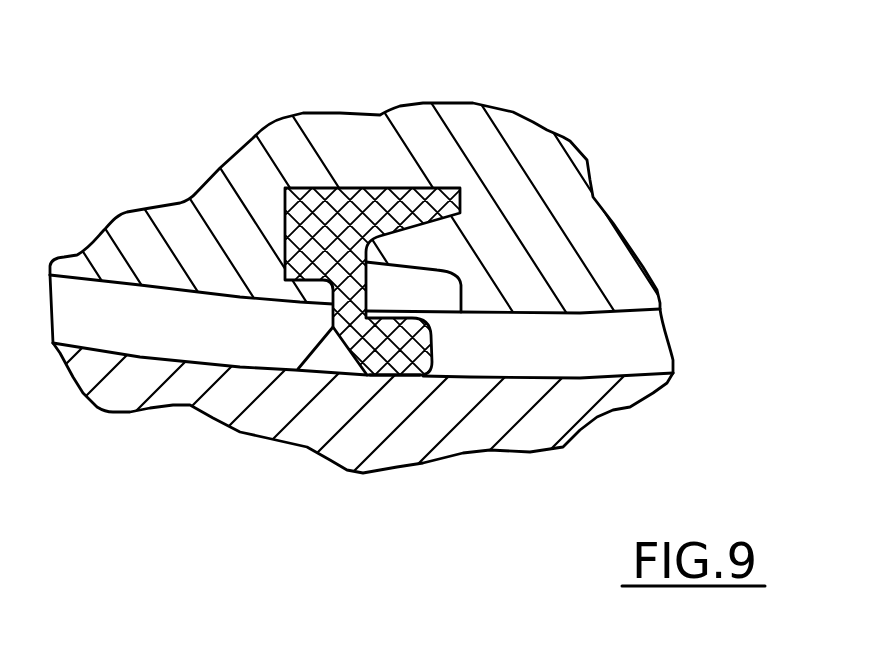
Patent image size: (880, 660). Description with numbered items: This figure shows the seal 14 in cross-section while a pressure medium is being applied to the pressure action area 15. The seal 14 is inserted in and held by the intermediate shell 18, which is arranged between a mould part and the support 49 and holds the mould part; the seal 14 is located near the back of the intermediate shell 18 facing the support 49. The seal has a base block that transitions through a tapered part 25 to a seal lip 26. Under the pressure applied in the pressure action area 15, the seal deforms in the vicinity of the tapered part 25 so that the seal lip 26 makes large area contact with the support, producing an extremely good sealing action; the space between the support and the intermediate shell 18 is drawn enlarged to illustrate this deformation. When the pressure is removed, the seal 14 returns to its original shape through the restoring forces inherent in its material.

The seal 14 is at (337, 187).
The pressure action area 15 is at (635, 340).
The intermediate shell 18 is at (553, 157).
The tapered part 25 is at (280, 375).
The seal lip 26 is at (398, 378).
The support 49 is at (128, 390).